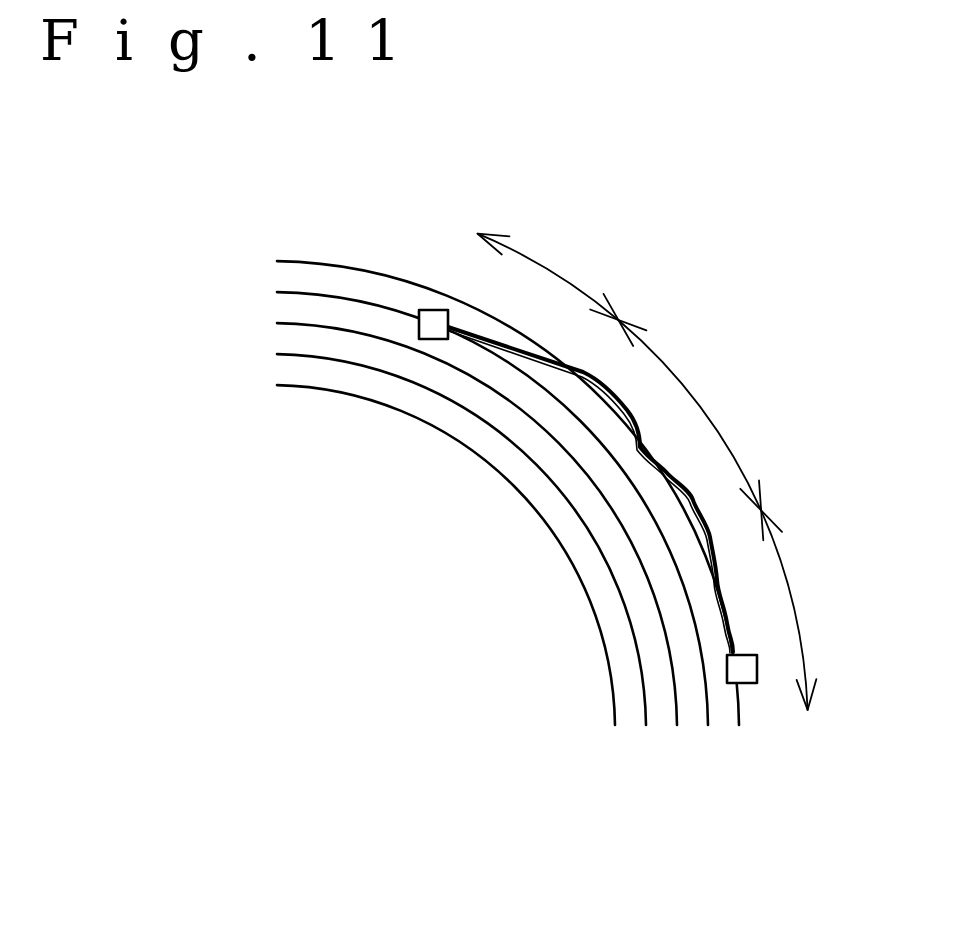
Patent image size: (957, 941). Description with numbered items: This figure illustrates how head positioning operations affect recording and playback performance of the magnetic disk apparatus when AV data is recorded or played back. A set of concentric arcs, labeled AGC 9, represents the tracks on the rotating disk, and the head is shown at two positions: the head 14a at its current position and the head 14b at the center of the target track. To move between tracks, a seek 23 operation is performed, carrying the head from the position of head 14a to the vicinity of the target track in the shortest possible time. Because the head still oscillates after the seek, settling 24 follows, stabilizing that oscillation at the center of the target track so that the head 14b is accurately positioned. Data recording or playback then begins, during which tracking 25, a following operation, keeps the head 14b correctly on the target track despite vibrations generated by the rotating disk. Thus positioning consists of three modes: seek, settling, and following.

The AGC 9 is at (478, 416).
The head 14a is at (423, 338).
The head 14b is at (750, 683).
The seek 23 is at (567, 283).
The settling 24 is at (705, 405).
The tracking 25 is at (795, 603).